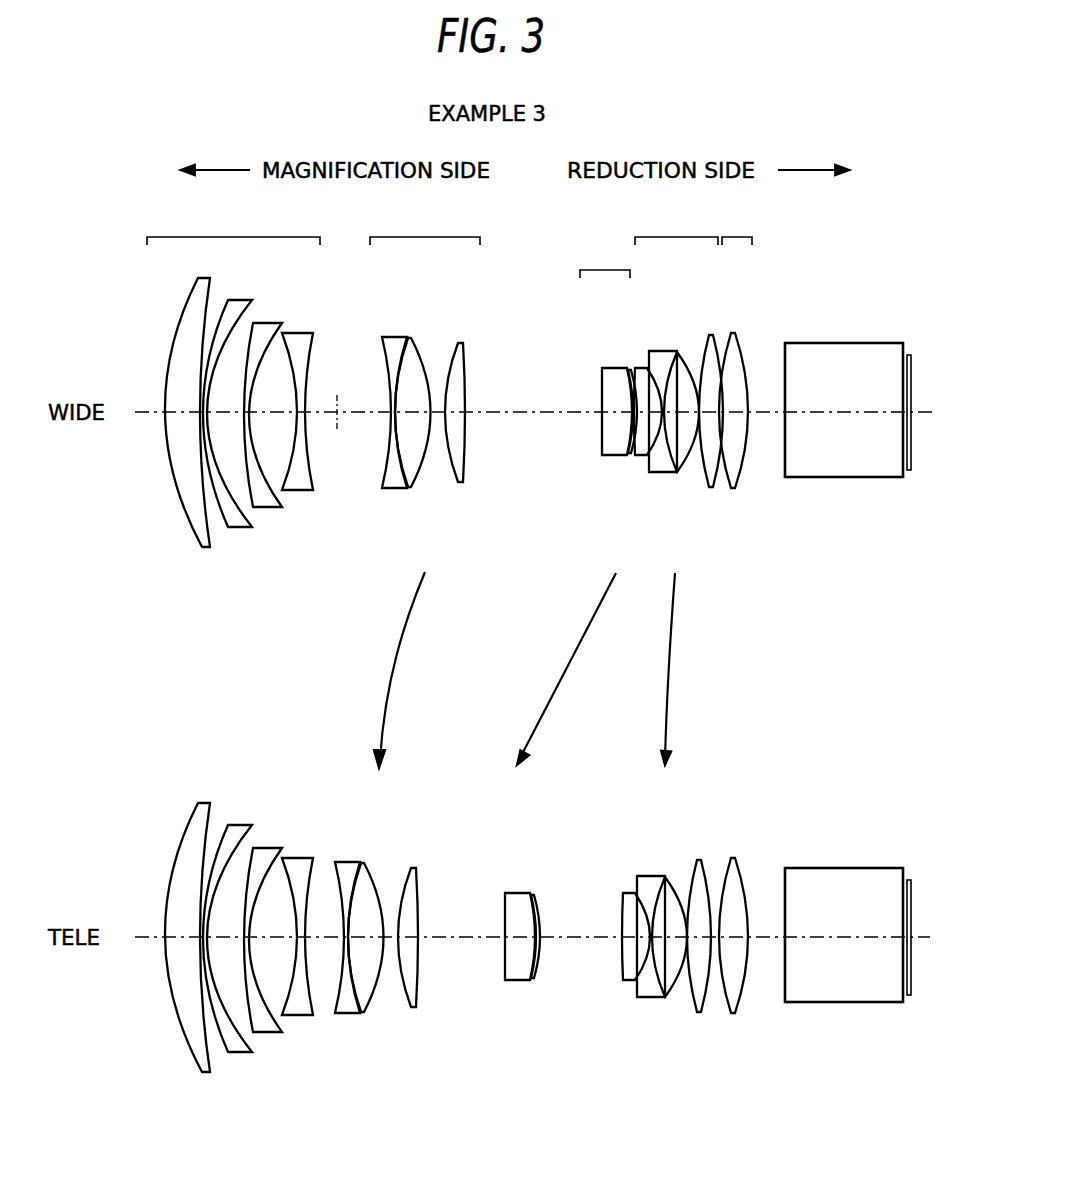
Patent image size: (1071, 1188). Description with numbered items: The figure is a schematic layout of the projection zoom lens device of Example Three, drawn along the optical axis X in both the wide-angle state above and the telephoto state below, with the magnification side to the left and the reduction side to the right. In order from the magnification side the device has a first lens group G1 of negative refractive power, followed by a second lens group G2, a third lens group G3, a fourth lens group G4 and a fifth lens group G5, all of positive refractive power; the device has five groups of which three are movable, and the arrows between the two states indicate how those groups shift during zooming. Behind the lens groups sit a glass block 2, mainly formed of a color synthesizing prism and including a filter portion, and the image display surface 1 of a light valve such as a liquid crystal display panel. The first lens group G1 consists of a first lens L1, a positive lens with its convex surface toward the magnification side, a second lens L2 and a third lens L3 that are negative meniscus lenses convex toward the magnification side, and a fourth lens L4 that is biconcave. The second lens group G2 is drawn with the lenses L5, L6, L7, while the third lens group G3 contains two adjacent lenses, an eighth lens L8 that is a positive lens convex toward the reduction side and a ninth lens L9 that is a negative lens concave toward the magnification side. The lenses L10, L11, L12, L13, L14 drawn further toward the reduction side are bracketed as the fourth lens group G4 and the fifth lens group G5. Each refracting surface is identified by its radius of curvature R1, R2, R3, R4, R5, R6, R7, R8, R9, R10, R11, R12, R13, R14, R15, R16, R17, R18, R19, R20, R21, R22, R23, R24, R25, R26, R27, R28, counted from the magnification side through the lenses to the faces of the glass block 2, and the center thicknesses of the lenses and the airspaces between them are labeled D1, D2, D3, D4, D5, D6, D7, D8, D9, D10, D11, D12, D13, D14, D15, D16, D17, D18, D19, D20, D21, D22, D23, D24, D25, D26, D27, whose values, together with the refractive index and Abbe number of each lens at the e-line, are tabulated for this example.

The image display surface 1 is at (912, 458).
The glass block 2 is at (840, 478).
The optical axis X is at (344, 436).
The first lens group G1 is at (233, 228).
The second lens group G2 is at (425, 228).
The third lens group G3 is at (605, 261).
The fourth lens group G4 is at (676, 228).
The fifth lens group G5 is at (736, 228).
The first lens L1 is at (183, 520).
The second lens L2 is at (240, 530).
The third lens L3 is at (278, 510).
The fourth lens L4 is at (300, 494).
The fifth lens L5 is at (388, 492).
The sixth lens L6 is at (415, 490).
The seventh lens L7 is at (460, 486).
The eighth lens L8 is at (604, 458).
The ninth lens L9 is at (630, 458).
The tenth lens L10 is at (638, 458).
The eleventh lens L11 is at (665, 475).
The twelfth lens L12 is at (707, 490).
The lens L13 is at (740, 492).
The lens L14 is at (745, 488).
The radius of curvature of first lens surface R1 is at (182, 325).
The radius of curvature of second lens surface R2 is at (211, 292).
The radius of curvature of third lens surface R3 is at (228, 318).
The radius of curvature of fourth lens surface R4 is at (245, 345).
The radius of curvature of fifth lens surface R5 is at (262, 352).
The radius of curvature of sixth lens surface R6 is at (283, 358).
The radius of curvature of seventh lens surface R7 is at (302, 352).
The radius of curvature of eighth lens surface R8 is at (312, 362).
The radius of curvature of ninth lens surface R9 is at (386, 345).
The radius of curvature of tenth lens surface R10 is at (402, 345).
The radius of curvature of eleventh lens surface R11 is at (428, 355).
The radius of curvature of twelfth lens surface R12 is at (450, 357).
The radius of curvature of thirteenth lens surface R13 is at (464, 367).
The radius of curvature of fourteenth lens surface R14 is at (602, 385).
The radius of curvature of fifteenth lens surface R15 is at (624, 375).
The radius of curvature of sixteenth lens surface R16 is at (629, 372).
The radius of curvature of seventeenth lens surface R17 is at (634, 375).
The radius of curvature of eighteenth lens surface R18 is at (650, 372).
The radius of curvature of nineteenth lens surface R19 is at (660, 358).
The radius of curvature of twentieth lens surface R20 is at (678, 355).
The radius of curvature of twenty-first lens surface R21 is at (700, 352).
The radius of curvature of twenty-second lens surface R22 is at (710, 340).
The radius of curvature of twenty-third lens surface R23 is at (720, 338).
The radius of curvature of twenty-fourth lens surface R24 is at (736, 338).
The radius of curvature of twenty-fifth lens surface R25 is at (748, 350).
The radius of curvature of twenty-sixth lens surface R26 is at (760, 360).
The radius of curvature of twenty-seventh surface R27 is at (788, 348).
The radius of curvature of twenty-eighth surface R28 is at (905, 345).
The center thickness of first lens D1 is at (172, 400).
The airspace between first and second lenses D2 is at (172, 424).
The center thickness of second lens D3 is at (186, 448).
The airspace between second and third lenses D4 is at (198, 372).
The center thickness of third lens D5 is at (248, 420).
The airspace between third and fourth lenses D6 is at (250, 410).
The center thickness of fourth lens D7 is at (303, 420).
The airspace between first and second lens groups D8 is at (340, 396).
The center thickness of fifth lens D9 is at (393, 424).
The center thickness of sixth lens D10 is at (391, 400).
The airspace between sixth and seventh lenses D11 is at (455, 423).
The center thickness of seventh lens D12 is at (457, 405).
The airspace between second and third lens groups D13 is at (503, 418).
The center thickness of eighth lens D14 is at (616, 420).
The airspace between eighth and ninth lenses D15 is at (626, 406).
The center thickness of ninth lens D16 is at (631, 428).
The airspace between third and fourth lens groups D17 is at (635, 440).
The center thickness or airspace D18 is at (643, 450).
The center thickness or airspace D19 is at (656, 458).
The center thickness or airspace D20 is at (667, 470).
The center thickness or airspace D21 is at (693, 470).
The center thickness or airspace D22 is at (706, 465).
The center thickness or airspace D23 is at (740, 448).
The center thickness or airspace D24 is at (738, 432).
The center thickness or airspace D25 is at (752, 400).
The airspace between fifth lens group and glass block D26 is at (783, 404).
The thickness of glass block D27 is at (800, 420).